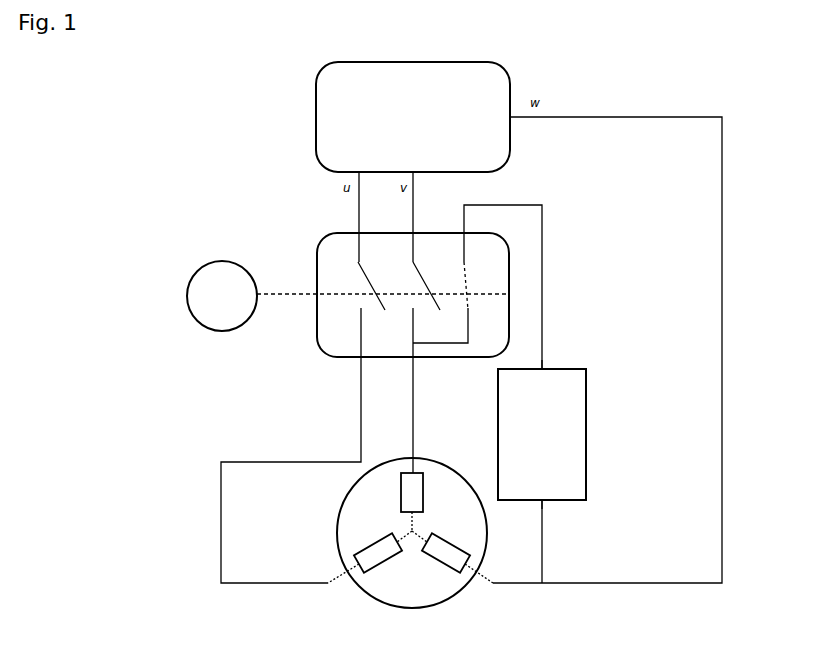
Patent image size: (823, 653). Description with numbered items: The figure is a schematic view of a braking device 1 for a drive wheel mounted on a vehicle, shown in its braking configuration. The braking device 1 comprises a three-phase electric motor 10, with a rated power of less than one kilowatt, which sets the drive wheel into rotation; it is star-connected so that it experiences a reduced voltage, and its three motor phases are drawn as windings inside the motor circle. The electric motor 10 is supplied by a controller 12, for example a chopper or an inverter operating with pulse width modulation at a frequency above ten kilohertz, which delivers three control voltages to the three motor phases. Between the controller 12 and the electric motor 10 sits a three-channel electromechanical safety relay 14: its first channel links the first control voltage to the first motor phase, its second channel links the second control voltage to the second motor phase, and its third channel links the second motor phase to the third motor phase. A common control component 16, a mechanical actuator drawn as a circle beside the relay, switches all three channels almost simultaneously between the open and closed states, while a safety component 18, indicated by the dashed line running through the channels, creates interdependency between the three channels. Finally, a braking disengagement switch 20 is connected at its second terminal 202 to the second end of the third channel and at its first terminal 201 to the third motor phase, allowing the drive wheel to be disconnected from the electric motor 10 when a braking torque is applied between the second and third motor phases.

The braking device 1 is at (109, 208).
The three-phase electric motor 10 is at (412, 606).
The controller 12 is at (316, 104).
The electromechanical safety relay 14 is at (352, 359).
The common control component 16 is at (188, 308).
The safety component 18 is at (332, 295).
The braking disengagement switch 20 is at (498, 407).
The first terminal 201 is at (542, 500).
The second terminal 202 is at (542, 369).